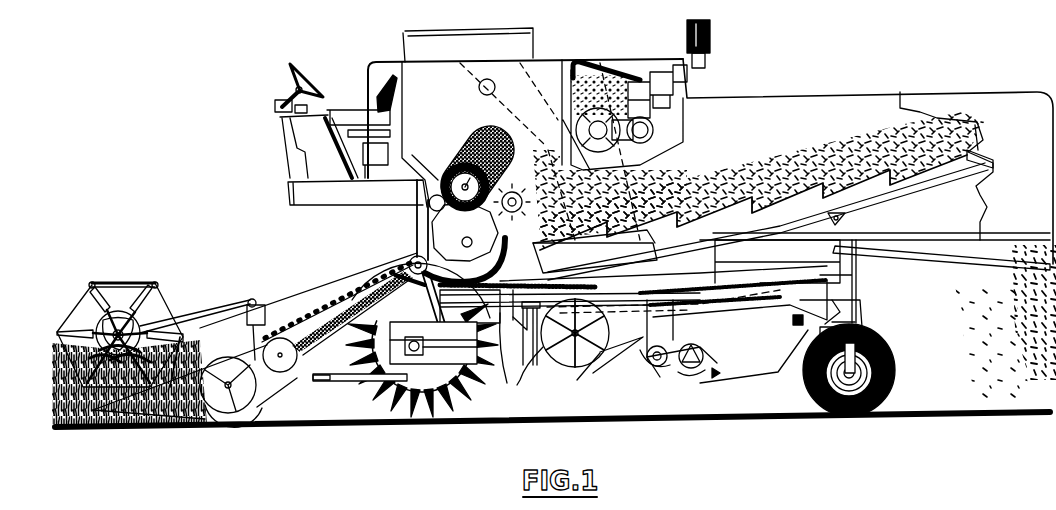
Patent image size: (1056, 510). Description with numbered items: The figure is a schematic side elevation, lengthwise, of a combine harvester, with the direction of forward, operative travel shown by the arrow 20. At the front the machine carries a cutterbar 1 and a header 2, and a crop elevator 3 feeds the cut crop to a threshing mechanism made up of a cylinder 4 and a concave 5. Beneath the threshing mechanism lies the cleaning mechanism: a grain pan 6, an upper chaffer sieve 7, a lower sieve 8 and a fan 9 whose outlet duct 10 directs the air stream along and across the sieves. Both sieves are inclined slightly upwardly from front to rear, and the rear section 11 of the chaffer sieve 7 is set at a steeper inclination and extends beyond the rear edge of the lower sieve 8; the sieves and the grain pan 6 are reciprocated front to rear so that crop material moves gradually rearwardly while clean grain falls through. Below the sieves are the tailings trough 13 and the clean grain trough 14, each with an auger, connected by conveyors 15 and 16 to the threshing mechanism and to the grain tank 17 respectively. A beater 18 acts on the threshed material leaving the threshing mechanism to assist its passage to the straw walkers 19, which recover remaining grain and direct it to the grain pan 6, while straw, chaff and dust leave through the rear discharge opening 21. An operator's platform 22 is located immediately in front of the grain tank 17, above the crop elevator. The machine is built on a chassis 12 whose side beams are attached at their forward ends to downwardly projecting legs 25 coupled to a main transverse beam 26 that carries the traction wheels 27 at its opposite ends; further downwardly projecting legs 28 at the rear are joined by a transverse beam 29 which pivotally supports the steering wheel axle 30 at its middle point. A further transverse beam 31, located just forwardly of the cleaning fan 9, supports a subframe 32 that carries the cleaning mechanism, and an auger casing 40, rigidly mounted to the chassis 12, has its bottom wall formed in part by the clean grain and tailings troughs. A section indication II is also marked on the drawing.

The cutterbar 1 is at (176, 425).
The header 2 is at (270, 412).
The crop elevator 3 is at (293, 385).
The cylinder 4 is at (432, 233).
The concave 5 is at (520, 332).
The grain pan 6 is at (512, 300).
The upper chaffer sieve 7 is at (764, 292).
The lower sieve 8 is at (806, 330).
The fan 9 is at (612, 340).
The outlet duct 10 is at (655, 340).
The rear section of the chaffer sieve 11 is at (822, 275).
The combine harvester chassis 12 is at (432, 420).
The tailings trough 13 is at (690, 350).
The clean grain trough 14 is at (650, 342).
The conveyor 15 is at (475, 152).
The conveyor 16 is at (610, 203).
The grain tank 17 is at (417, 60).
The beater 18 is at (515, 194).
The straw walkers 19 is at (834, 160).
The arrow 20 is at (190, 231).
The rear discharge opening 21 is at (942, 265).
The operator's platform 22 is at (297, 177).
The downwardly projecting legs 25 is at (405, 420).
The main transverse beam 26 is at (368, 420).
The traction wheels 27 is at (470, 420).
The downwardly projecting legs 28 is at (825, 324).
The transverse beam 29 is at (832, 322).
The steering wheel axle 30 is at (887, 353).
The further transverse beam 31 is at (535, 335).
The subframe 32 is at (556, 340).
The auger casing 40 is at (705, 385).
The section plane II is at (708, 390).